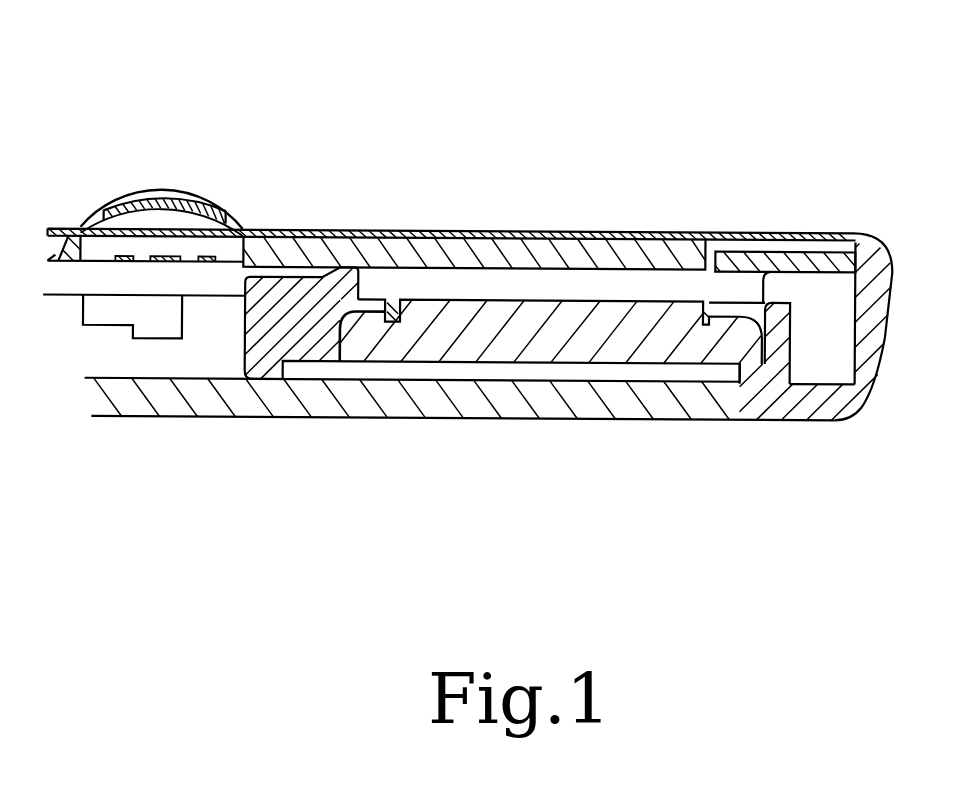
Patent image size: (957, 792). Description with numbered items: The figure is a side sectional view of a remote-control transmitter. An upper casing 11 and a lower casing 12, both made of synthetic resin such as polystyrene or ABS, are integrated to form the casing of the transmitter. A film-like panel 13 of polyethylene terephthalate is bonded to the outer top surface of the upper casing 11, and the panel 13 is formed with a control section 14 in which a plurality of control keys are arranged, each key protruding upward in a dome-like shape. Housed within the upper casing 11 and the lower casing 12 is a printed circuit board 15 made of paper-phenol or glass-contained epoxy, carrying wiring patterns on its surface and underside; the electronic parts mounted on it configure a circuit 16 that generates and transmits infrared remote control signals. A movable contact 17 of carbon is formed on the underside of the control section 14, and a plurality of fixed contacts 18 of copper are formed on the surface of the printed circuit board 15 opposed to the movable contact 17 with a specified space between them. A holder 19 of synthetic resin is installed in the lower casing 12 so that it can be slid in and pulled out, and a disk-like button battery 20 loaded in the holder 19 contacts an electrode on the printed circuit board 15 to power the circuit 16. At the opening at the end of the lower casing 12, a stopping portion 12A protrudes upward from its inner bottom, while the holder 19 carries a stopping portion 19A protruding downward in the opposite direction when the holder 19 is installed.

The upper casing 11 is at (510, 235).
The lower casing 12 is at (437, 402).
The stopping portion 12A is at (750, 367).
The panel 13 is at (366, 230).
The control section 14 is at (188, 203).
The printed circuit board 15 is at (57, 280).
The circuit 16 is at (108, 315).
The movable contact 17 is at (131, 196).
The fixed contacts 18 is at (207, 265).
The holder 19 is at (842, 407).
The stopping portion 19A is at (263, 362).
The button battery 20 is at (532, 345).